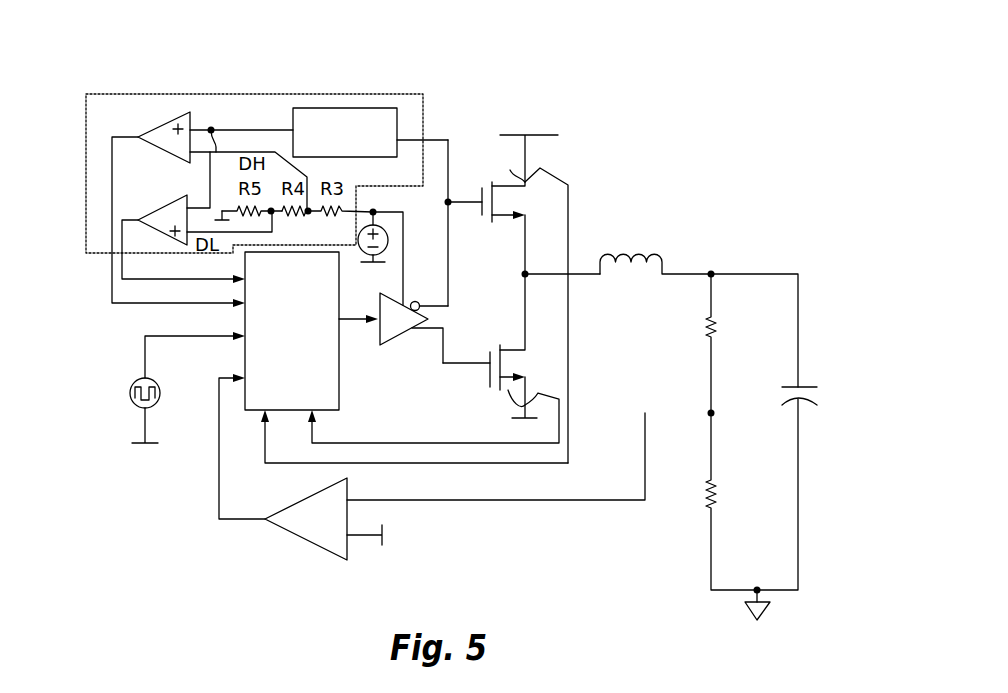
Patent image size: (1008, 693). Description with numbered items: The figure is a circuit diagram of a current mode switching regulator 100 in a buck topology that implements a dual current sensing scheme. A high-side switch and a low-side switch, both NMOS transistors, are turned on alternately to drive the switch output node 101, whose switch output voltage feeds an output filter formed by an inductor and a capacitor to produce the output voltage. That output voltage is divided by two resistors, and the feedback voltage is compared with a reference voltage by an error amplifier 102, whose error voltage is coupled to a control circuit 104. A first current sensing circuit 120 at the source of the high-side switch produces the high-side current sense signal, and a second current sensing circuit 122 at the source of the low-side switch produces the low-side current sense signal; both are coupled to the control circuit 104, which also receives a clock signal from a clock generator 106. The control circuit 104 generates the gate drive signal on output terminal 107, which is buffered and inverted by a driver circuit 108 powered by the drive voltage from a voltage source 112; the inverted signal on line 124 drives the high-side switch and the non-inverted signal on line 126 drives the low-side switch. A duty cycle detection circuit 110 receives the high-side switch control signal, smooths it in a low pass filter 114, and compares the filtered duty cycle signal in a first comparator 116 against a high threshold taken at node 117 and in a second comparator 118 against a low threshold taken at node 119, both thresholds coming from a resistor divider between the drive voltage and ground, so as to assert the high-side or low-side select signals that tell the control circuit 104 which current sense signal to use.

The current mode switching regulator 100 is at (640, 70).
The duty cycle detection circuit 110 is at (380, 95).
The first comparator 116 is at (163, 155).
The second comparator 118 is at (163, 240).
The low pass filter 114 is at (384, 153).
The voltage source 112 is at (388, 246).
The node between resistors R4 and R5 119 is at (273, 217).
The node between resistors R3 and R4 117 is at (310, 216).
The control circuit 104 is at (279, 398).
The output terminal 107 is at (350, 320).
The driver circuit 108 is at (386, 342).
The high-side gate drive node 124 is at (448, 276).
The first current sensing circuit 120 is at (532, 180).
The switch output node 101 is at (528, 278).
The low-side gate drive line 126 is at (446, 365).
The second current sensing circuit 122 is at (514, 398).
The clock generator 106 is at (130, 398).
The error amplifier 102 is at (308, 531).